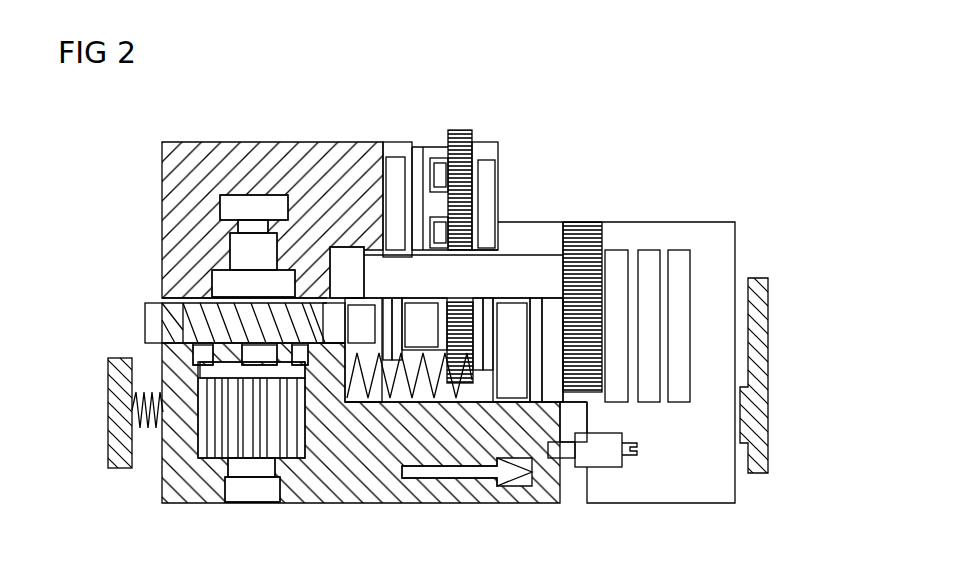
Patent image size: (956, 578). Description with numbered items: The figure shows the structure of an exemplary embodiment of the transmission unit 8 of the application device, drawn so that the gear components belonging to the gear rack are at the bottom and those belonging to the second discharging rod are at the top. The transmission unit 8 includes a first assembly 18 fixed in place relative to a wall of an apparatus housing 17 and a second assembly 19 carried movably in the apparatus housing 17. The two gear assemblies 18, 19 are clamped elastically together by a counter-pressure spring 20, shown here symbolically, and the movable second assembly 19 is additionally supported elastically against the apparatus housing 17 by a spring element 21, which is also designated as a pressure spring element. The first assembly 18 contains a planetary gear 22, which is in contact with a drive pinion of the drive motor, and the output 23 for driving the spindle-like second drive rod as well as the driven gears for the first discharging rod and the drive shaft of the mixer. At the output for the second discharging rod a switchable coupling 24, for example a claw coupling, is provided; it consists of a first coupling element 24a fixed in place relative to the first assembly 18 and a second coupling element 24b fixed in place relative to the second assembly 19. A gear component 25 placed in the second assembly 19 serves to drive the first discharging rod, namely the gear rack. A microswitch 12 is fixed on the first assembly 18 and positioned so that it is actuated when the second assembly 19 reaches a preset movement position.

The transmission unit 8 is at (718, 160).
The microswitch 12 is at (567, 462).
The apparatus housing 17 is at (108, 383).
The first assembly 18 is at (694, 497).
The second assembly 19 is at (240, 142).
The counter-pressure spring 20 is at (412, 403).
The spring element 21 is at (108, 418).
The planetary gear 22 is at (707, 258).
The output 23 is at (472, 133).
The switchable coupling 24 is at (455, 128).
The first coupling element 24a is at (440, 145).
The second coupling element 24b is at (412, 143).
The gear component 25 is at (205, 432).